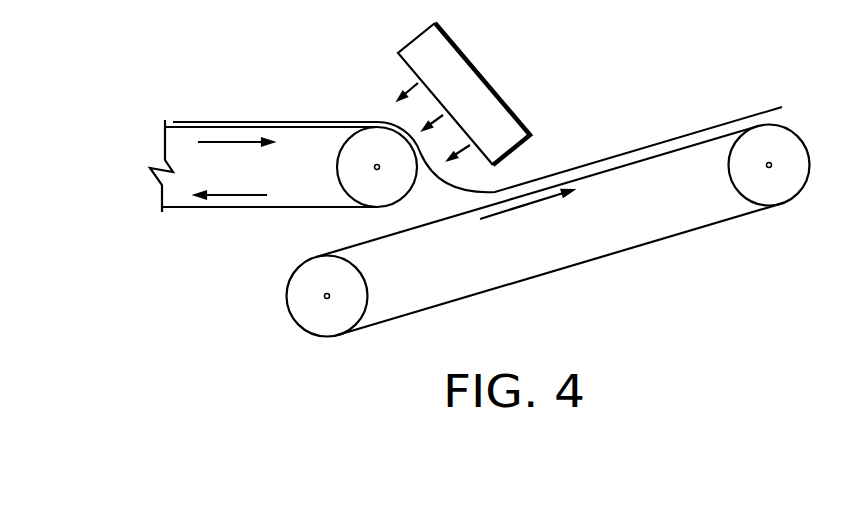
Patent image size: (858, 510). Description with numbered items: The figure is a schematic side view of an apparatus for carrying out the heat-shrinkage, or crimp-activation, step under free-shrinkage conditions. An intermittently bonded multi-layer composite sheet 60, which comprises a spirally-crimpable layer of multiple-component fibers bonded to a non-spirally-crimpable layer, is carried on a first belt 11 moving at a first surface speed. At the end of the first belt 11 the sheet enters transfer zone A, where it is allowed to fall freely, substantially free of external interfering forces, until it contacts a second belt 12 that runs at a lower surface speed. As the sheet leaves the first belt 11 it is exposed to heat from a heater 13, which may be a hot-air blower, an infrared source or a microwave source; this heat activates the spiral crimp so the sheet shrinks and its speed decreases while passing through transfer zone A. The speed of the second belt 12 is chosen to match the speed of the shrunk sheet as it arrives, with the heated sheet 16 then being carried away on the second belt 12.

The intermittently bonded multi-layer composite sheet 60 is at (283, 157).
The first belt 11 is at (252, 209).
The heater 13 is at (485, 77).
The sheet (recording medium) 16 is at (661, 116).
The second belt 12 is at (561, 270).
The transfer zone A is at (420, 204).